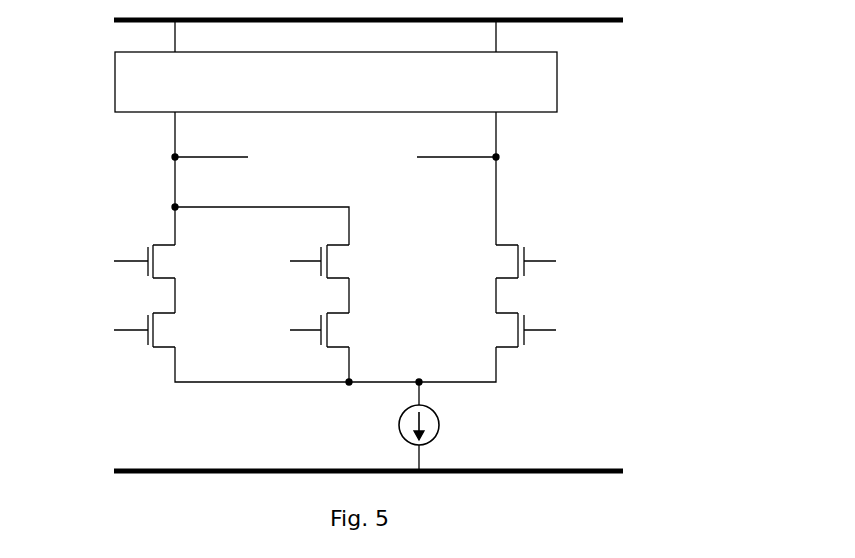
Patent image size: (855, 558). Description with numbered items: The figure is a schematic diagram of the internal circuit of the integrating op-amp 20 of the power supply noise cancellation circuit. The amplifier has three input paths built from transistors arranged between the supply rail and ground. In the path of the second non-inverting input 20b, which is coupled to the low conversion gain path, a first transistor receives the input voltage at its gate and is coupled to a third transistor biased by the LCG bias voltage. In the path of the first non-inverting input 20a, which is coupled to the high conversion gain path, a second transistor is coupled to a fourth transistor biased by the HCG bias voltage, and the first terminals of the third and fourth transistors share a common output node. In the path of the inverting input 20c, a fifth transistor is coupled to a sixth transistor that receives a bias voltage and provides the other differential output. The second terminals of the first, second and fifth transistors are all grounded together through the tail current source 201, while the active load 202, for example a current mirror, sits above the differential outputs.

The integrating op-amp 20 is at (82, 50).
The active load 202 is at (557, 90).
The tail current source 201 is at (455, 430).
The first non-inverting input vin_p_hcg 20a is at (240, 318).
The second non-inverting input vin_p_lcg 20b is at (48, 318).
The inverting input vin_n 20c is at (583, 318).